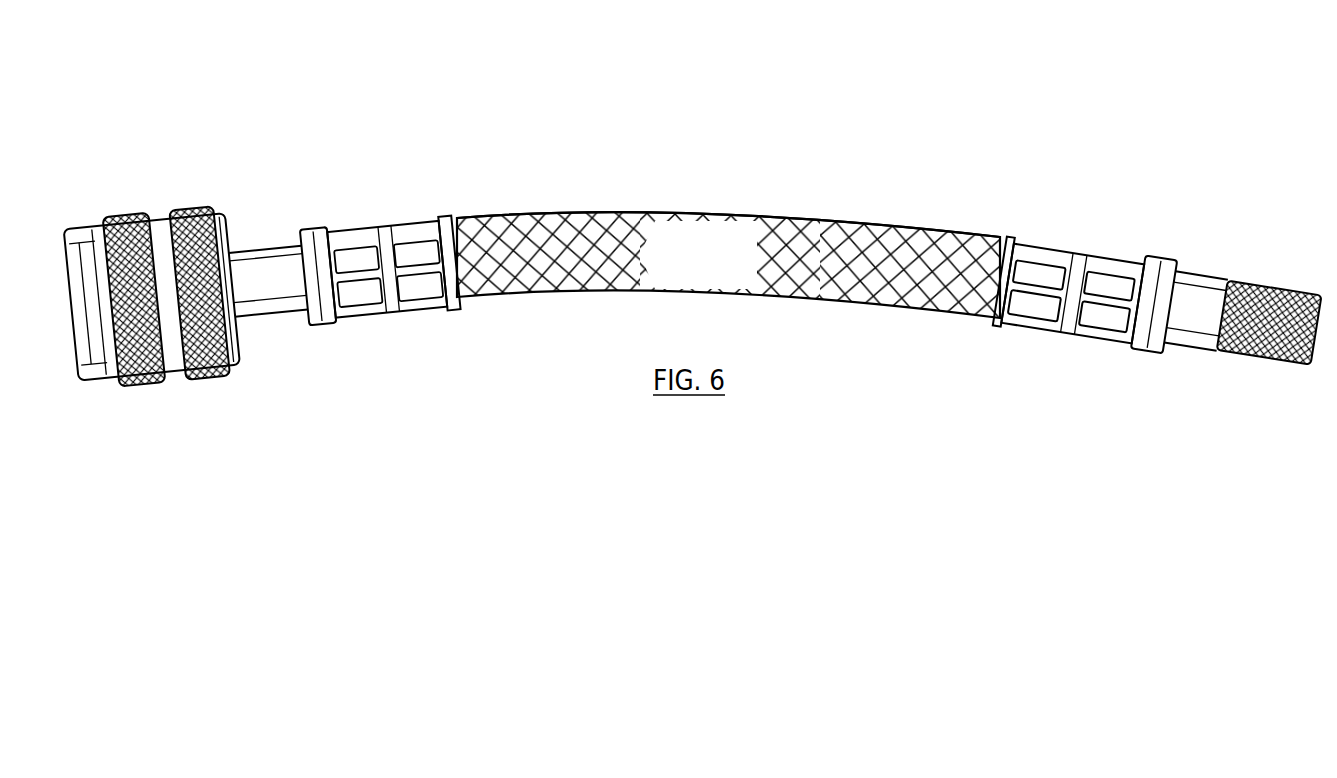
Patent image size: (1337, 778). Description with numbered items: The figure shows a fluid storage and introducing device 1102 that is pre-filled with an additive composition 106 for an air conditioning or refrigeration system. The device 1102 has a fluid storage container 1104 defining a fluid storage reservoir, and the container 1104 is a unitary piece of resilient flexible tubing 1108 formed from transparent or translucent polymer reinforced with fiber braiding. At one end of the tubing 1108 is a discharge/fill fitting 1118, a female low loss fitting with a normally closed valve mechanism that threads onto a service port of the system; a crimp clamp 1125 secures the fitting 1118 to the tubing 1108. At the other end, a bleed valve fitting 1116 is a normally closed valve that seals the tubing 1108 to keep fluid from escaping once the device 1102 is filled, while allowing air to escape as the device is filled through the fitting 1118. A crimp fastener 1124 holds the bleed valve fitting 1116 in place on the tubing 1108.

The fluid storage and introducing device 1102 is at (693, 217).
The discharge/fill fitting 1118 is at (160, 217).
The crimp clamp 1125 is at (347, 233).
The fluid storage container 1104 is at (512, 237).
The resilient flexible tubing 1108 is at (655, 212).
The additive composition 106 is at (745, 270).
The crimp fastener 1124 is at (1078, 250).
The bleed valve fitting 1116 is at (1248, 283).